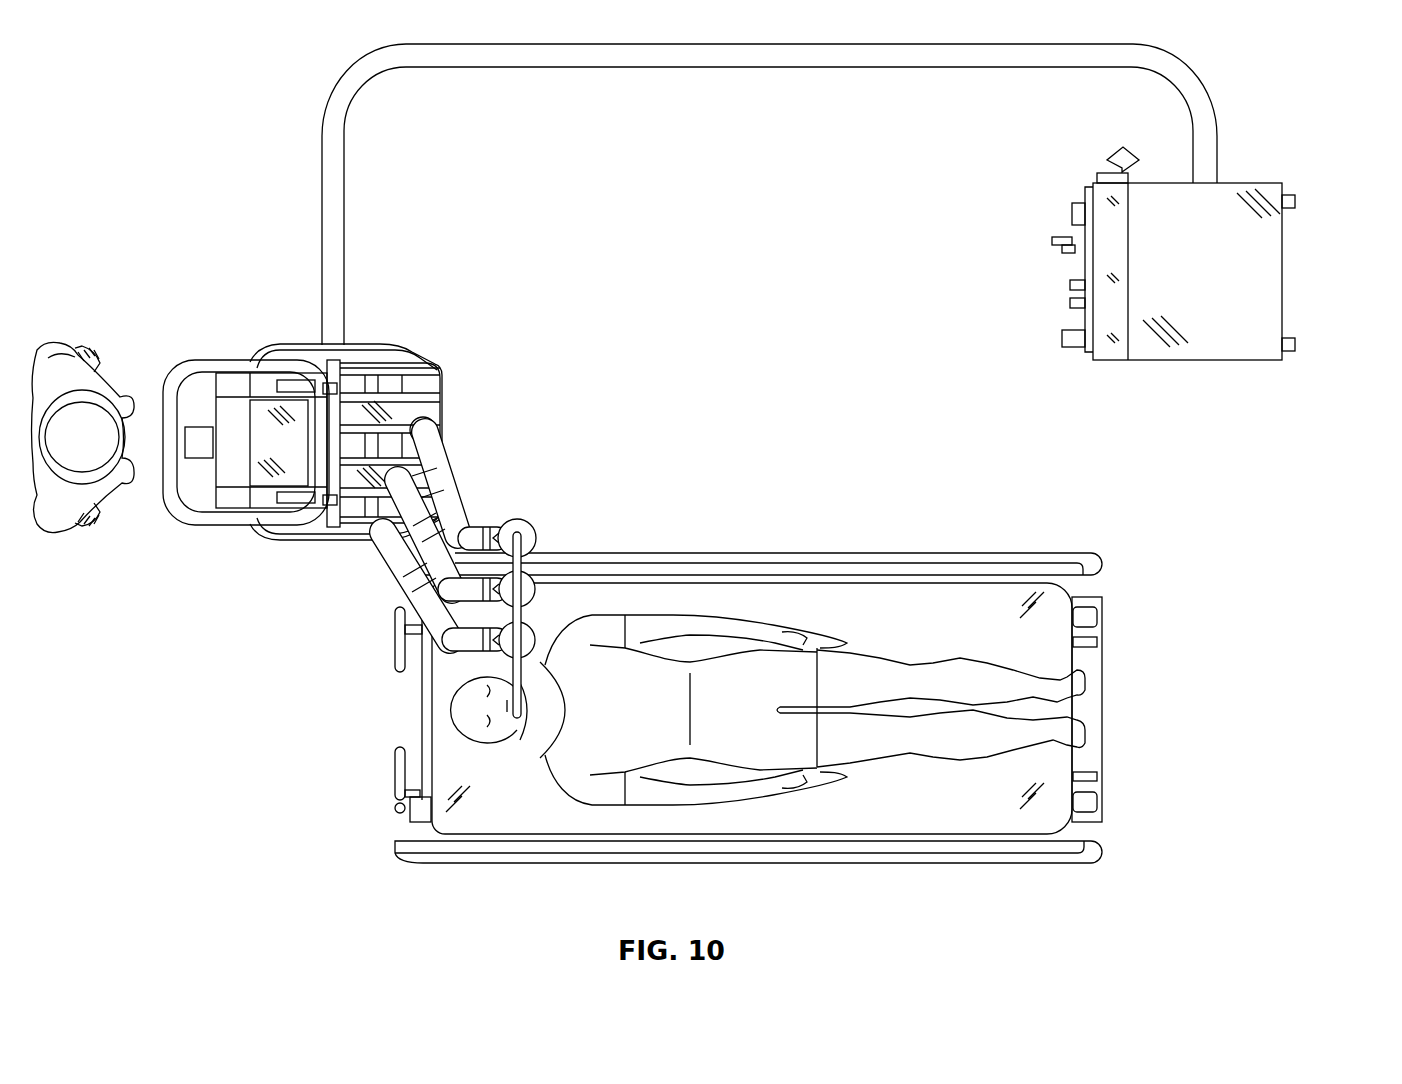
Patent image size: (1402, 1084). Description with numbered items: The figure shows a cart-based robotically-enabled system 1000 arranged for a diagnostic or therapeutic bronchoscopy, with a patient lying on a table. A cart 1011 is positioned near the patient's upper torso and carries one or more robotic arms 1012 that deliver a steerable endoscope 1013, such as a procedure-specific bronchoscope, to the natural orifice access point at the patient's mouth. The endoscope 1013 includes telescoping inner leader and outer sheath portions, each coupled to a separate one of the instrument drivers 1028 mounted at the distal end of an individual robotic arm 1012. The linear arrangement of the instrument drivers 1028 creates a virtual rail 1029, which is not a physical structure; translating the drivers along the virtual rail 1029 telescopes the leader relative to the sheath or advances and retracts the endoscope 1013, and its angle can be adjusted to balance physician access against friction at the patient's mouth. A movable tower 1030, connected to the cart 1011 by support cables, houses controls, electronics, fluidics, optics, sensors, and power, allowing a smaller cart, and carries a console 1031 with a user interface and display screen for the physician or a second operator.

The cart-based robotically-enabled system 1000 is at (1262, 858).
The cart 1011 is at (263, 334).
The robotic arms 1012 is at (487, 447).
The steerable endoscope 1013 is at (748, 683).
The instrument drivers 1028 is at (553, 577).
The virtual rail 1029 is at (523, 514).
The movable tower 1030 is at (1139, 296).
The console 1031 is at (1040, 277).